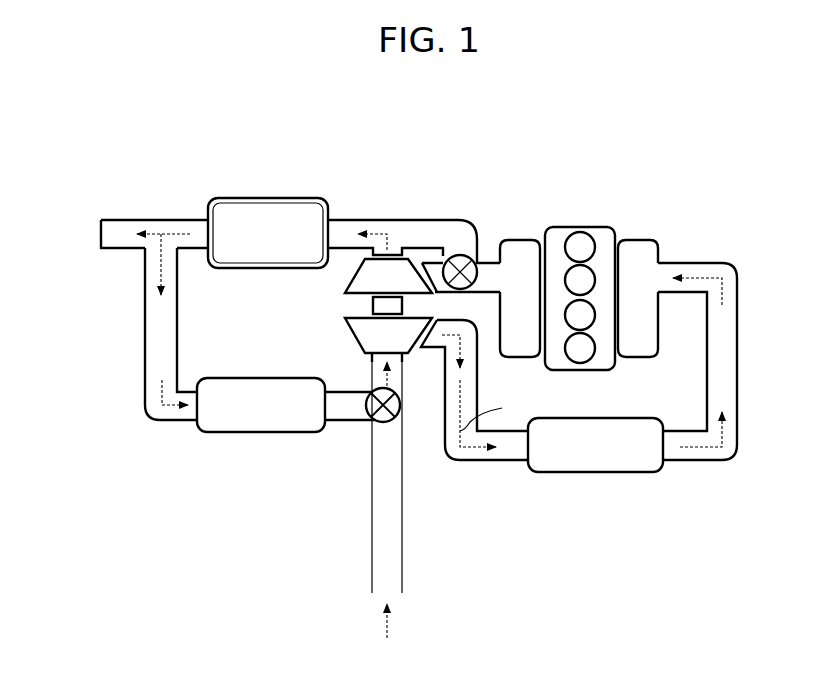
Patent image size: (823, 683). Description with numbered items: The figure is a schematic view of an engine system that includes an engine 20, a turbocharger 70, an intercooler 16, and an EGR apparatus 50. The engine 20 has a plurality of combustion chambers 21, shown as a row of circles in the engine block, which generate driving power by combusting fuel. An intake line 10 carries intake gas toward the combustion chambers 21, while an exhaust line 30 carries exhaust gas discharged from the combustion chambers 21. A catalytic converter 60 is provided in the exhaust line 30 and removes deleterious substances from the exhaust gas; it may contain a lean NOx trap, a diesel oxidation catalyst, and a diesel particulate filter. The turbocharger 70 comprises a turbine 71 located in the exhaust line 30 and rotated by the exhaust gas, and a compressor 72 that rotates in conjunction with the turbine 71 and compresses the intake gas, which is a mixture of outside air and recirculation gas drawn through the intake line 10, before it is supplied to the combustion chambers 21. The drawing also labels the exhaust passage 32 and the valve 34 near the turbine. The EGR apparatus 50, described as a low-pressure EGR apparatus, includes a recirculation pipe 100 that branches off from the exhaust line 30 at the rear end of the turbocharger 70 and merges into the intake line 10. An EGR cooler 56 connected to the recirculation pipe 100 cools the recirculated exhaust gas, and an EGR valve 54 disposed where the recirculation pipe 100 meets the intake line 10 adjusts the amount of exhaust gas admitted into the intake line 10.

The intake line 10 is at (403, 375).
The intercooler 16 is at (597, 475).
The engine 20 is at (642, 306).
The combustion chamber 21 is at (597, 316).
The exhaust line 30 is at (323, 255).
The exhaust line 32 is at (432, 219).
The wastegate valve 34 is at (459, 255).
The EGR apparatus 50 is at (266, 463).
The EGR valve 54 is at (360, 445).
The EGR cooler 56 is at (255, 433).
The catalytic converter 60 is at (268, 197).
The turbocharger 70 is at (262, 283).
The turbine 71 is at (345, 292).
The compressor 72 is at (345, 319).
The recirculation pipe 100 is at (145, 338).